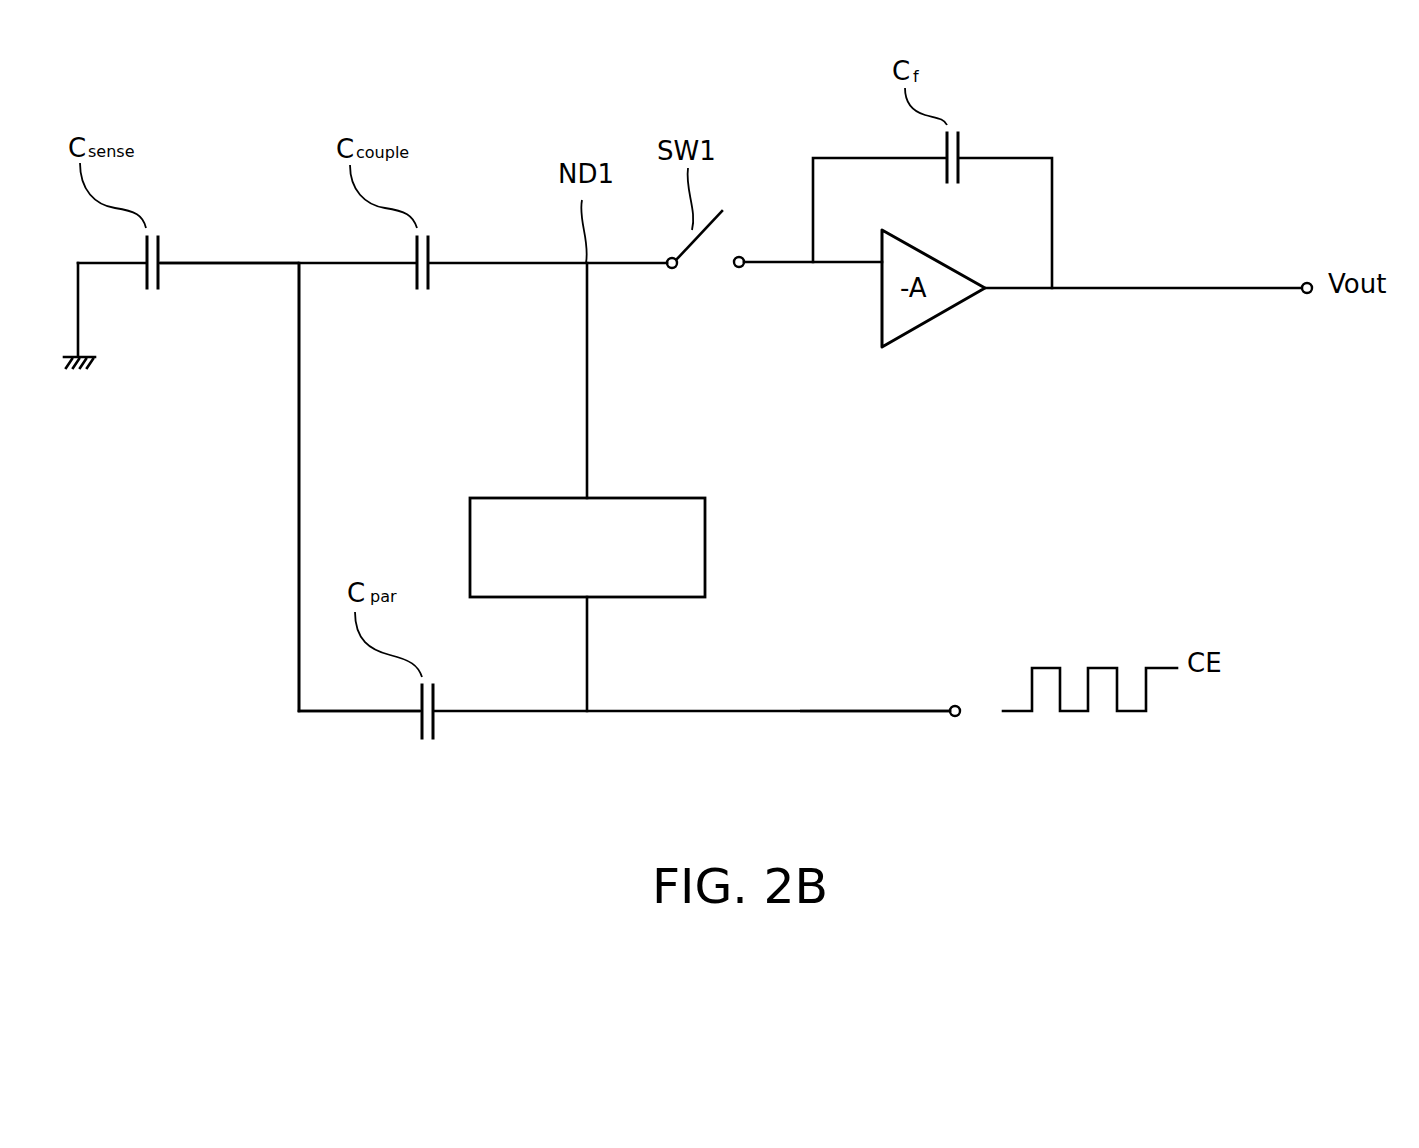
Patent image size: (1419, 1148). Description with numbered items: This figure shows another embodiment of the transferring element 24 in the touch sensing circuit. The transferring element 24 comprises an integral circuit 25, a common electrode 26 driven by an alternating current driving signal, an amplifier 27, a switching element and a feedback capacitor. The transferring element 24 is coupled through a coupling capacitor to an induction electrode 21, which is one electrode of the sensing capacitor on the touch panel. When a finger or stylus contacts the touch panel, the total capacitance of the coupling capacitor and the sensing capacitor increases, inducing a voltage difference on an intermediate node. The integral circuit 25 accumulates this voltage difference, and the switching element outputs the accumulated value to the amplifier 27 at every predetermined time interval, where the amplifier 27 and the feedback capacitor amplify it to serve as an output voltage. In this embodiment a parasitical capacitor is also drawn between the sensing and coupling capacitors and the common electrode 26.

The induction electrode 21 is at (231, 263).
The transferring element 24 is at (272, 753).
The integral circuit 25 is at (705, 543).
The common electrode 26 is at (870, 711).
The amplifier 27 is at (936, 322).